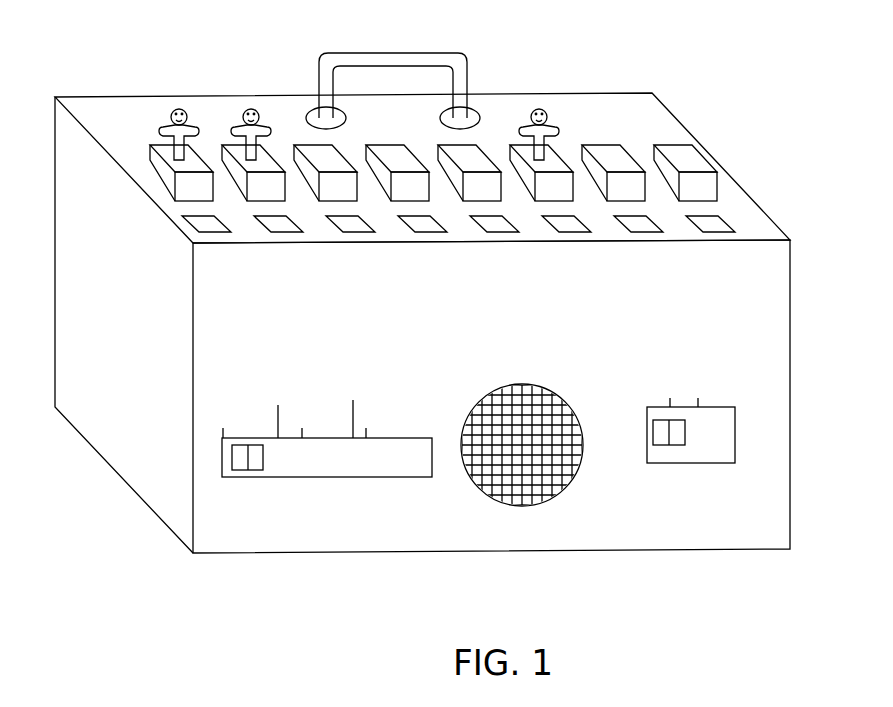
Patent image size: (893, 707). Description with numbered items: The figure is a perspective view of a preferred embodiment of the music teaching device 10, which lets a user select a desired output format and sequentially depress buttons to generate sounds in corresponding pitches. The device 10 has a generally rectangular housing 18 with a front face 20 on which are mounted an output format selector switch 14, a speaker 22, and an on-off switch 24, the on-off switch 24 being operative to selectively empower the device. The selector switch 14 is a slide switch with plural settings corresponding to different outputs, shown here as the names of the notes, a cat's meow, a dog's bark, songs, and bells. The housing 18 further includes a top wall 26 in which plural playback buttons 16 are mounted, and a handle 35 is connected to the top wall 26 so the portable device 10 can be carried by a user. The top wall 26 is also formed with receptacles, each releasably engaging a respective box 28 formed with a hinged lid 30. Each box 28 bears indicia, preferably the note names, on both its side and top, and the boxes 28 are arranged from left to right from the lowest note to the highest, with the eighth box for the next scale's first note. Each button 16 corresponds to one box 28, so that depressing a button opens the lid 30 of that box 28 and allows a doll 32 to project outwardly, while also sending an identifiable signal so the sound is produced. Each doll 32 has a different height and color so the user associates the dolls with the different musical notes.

The music teaching device 10 is at (722, 102).
The output format selector switch 14 is at (315, 506).
The playback buttons 16 is at (345, 220).
The housing 18 is at (113, 495).
The front face 20 is at (587, 313).
The speaker 22 is at (547, 476).
The on-off switch 24 is at (690, 463).
The top wall 26 is at (748, 228).
The box 28 is at (409, 135).
The hinged lid 30 is at (158, 140).
The doll 32 is at (238, 116).
The handle 35 is at (455, 64).